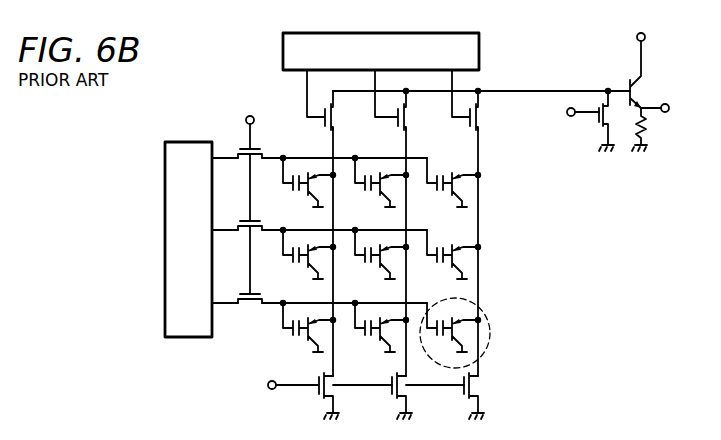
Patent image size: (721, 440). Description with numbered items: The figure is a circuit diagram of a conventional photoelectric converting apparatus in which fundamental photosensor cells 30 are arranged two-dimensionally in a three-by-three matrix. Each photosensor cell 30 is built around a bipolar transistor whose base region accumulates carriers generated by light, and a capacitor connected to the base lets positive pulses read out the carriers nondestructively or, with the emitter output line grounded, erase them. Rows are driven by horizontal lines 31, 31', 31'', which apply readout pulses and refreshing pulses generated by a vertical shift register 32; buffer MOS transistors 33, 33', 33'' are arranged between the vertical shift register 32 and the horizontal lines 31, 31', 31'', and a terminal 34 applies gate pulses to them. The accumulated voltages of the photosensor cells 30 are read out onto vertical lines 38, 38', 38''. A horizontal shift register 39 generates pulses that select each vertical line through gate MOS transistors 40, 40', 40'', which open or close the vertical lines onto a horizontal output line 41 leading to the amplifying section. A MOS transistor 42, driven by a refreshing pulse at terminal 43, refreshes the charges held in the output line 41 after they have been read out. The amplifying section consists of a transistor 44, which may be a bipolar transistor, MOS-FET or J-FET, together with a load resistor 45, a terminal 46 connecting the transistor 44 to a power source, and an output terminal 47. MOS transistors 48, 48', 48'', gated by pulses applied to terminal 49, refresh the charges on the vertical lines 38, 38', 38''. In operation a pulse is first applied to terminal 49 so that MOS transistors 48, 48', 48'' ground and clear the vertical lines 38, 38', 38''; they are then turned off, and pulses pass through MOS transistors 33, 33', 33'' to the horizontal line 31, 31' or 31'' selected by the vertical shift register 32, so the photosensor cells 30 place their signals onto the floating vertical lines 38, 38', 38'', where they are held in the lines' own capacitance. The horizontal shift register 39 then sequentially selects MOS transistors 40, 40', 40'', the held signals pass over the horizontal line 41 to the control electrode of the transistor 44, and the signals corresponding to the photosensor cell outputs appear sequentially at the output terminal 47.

The fundamental photosensor cell 30 is at (490, 330).
The horizontal line 31 is at (319, 139).
The horizontal line 31' is at (319, 213).
The horizontal line 31'' is at (319, 284).
The vertical shift register 32 is at (185, 338).
The buffer MOS transistor 33 is at (233, 137).
The buffer MOS transistor 33' is at (239, 192).
The buffer MOS transistor 33'' is at (239, 264).
The terminal 34 is at (250, 114).
The vertical line 38 is at (358, 252).
The vertical line 38' is at (430, 252).
The vertical line 38'' is at (505, 252).
The horizontal shift register 39 is at (432, 33).
The MOS transistor 40 is at (337, 101).
The MOS transistor 40' is at (411, 101).
The MOS transistor 40'' is at (490, 101).
The horizontal output line 41 is at (545, 90).
The MOS transistor 42 is at (597, 134).
The terminal 43 is at (568, 117).
The transistor 44 is at (629, 75).
The load resistor 45 is at (648, 125).
The terminal 46 is at (646, 38).
The output terminal 47 is at (669, 108).
The MOS transistor 48 is at (304, 398).
The MOS transistor 48' is at (382, 398).
The MOS transistor 48'' is at (450, 398).
The terminal 49 is at (266, 385).